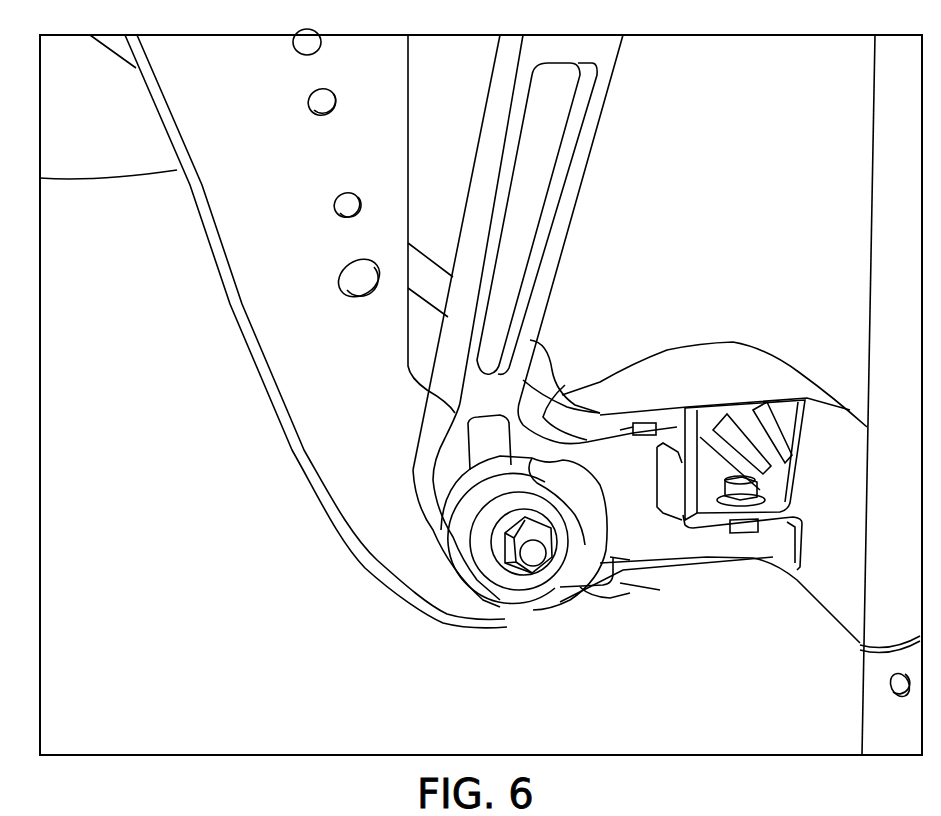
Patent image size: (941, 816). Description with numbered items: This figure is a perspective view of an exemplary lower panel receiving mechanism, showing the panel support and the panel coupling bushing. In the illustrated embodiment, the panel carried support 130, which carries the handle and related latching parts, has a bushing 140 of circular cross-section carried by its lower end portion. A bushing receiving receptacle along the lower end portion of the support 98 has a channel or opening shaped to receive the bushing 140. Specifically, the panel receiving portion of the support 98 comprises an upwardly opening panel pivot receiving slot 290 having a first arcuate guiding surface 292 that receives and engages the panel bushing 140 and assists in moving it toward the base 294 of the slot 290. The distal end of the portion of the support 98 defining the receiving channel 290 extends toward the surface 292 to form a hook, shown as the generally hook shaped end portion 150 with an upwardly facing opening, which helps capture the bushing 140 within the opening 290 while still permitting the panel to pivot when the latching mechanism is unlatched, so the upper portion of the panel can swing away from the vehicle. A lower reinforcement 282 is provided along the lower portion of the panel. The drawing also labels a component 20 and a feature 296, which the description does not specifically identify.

The frame 20 is at (797, 600).
The support 98 is at (350, 563).
The panel carried support 130 is at (650, 541).
The bushing 140 is at (467, 533).
The end portion 150 is at (586, 560).
The lower reinforcement 282 is at (712, 497).
The panel pivot receiving slot 290 is at (448, 470).
The first arcuate guiding surface 292 is at (452, 478).
The base 294 is at (499, 580).
The stop 296 is at (618, 545).